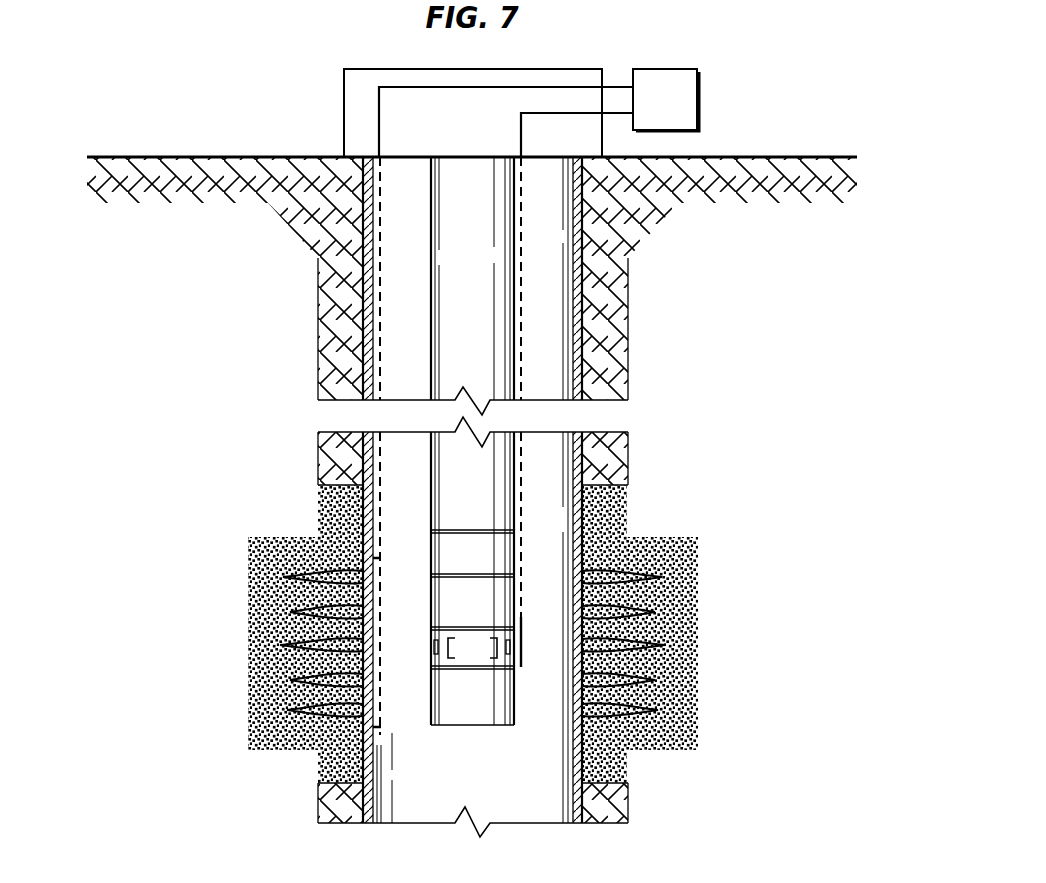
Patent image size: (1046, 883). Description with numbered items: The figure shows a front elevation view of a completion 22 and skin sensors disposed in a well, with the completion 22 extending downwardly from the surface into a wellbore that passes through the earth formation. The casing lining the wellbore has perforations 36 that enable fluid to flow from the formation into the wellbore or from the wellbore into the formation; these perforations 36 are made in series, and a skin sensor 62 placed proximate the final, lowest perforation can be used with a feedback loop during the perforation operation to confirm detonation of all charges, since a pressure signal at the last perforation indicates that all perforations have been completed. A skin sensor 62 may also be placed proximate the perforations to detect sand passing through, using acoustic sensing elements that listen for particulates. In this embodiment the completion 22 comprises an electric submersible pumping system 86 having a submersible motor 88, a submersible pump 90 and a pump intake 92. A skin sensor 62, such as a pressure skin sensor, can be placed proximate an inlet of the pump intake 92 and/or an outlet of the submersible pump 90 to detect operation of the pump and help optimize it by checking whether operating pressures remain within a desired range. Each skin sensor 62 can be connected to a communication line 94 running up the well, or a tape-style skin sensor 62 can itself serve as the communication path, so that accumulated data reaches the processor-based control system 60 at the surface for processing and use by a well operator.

The completion 22 is at (545, 325).
The perforations 36 is at (290, 681).
The control system 60 is at (680, 111).
The skin sensor 62 is at (378, 558).
The electric submersible pumping system 86 is at (519, 738).
The submersible motor 88 is at (458, 707).
The submersible pump 90 is at (458, 614).
The pump intake 92 is at (458, 659).
The communication line 94 is at (380, 465).